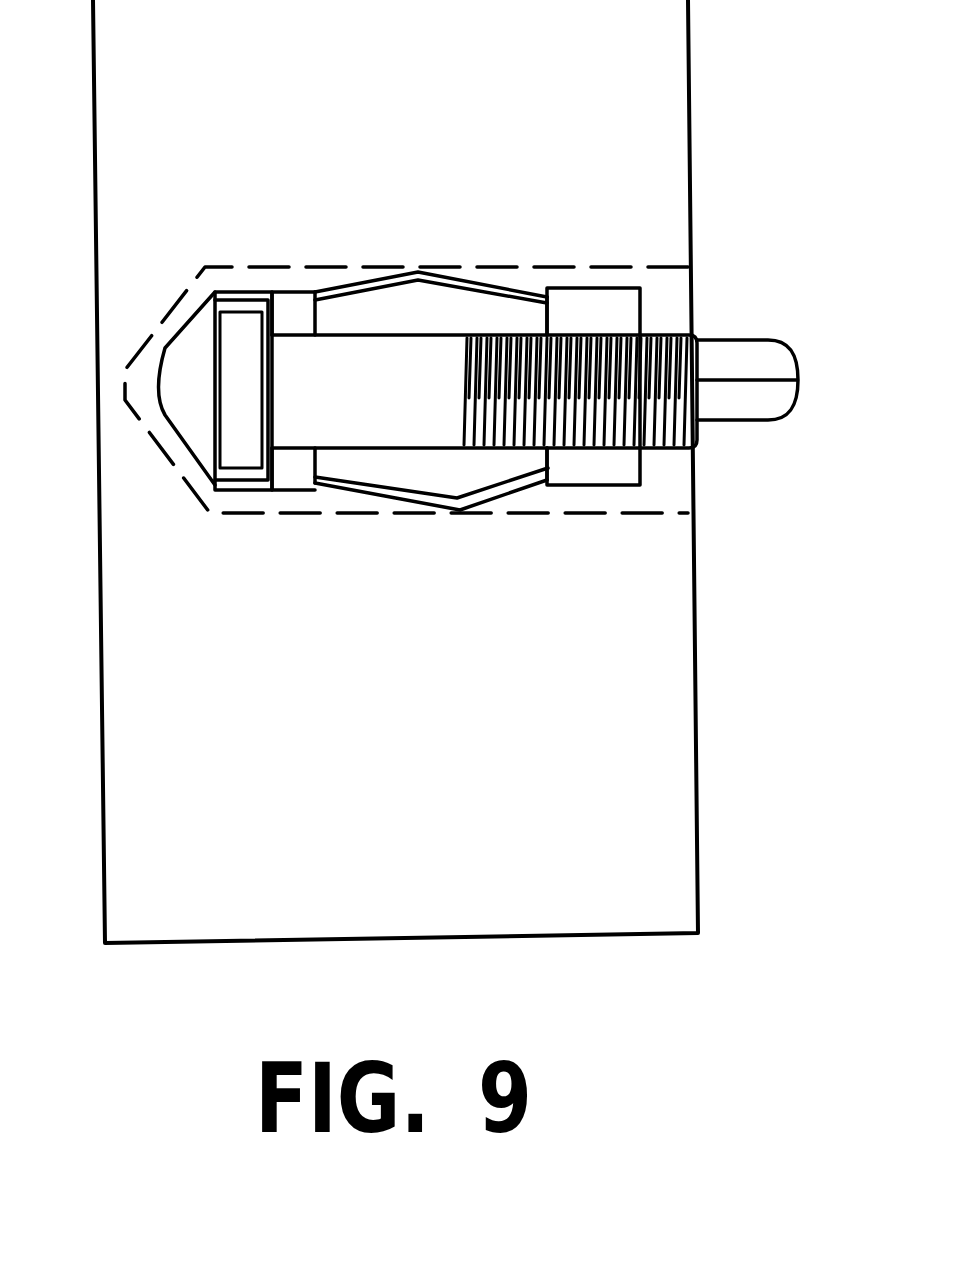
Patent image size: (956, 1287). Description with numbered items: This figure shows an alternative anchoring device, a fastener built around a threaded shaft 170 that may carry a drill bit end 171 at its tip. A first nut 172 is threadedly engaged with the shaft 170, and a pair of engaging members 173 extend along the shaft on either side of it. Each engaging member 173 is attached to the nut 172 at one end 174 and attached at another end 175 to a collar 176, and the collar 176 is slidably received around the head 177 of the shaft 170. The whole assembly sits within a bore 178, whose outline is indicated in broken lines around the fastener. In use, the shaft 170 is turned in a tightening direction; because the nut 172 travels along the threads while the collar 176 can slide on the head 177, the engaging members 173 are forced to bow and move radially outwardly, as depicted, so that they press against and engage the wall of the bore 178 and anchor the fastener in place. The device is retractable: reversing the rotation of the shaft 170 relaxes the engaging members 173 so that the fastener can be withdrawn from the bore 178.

The threaded shaft 170 is at (657, 367).
The drill bit end 171 is at (157, 402).
The first nut 172 is at (608, 310).
The engaging members 173 is at (457, 280).
The end 174 is at (545, 300).
The another end 175 is at (317, 300).
The collar 176 is at (283, 300).
The head 177 is at (241, 447).
The bore 178 is at (643, 266).